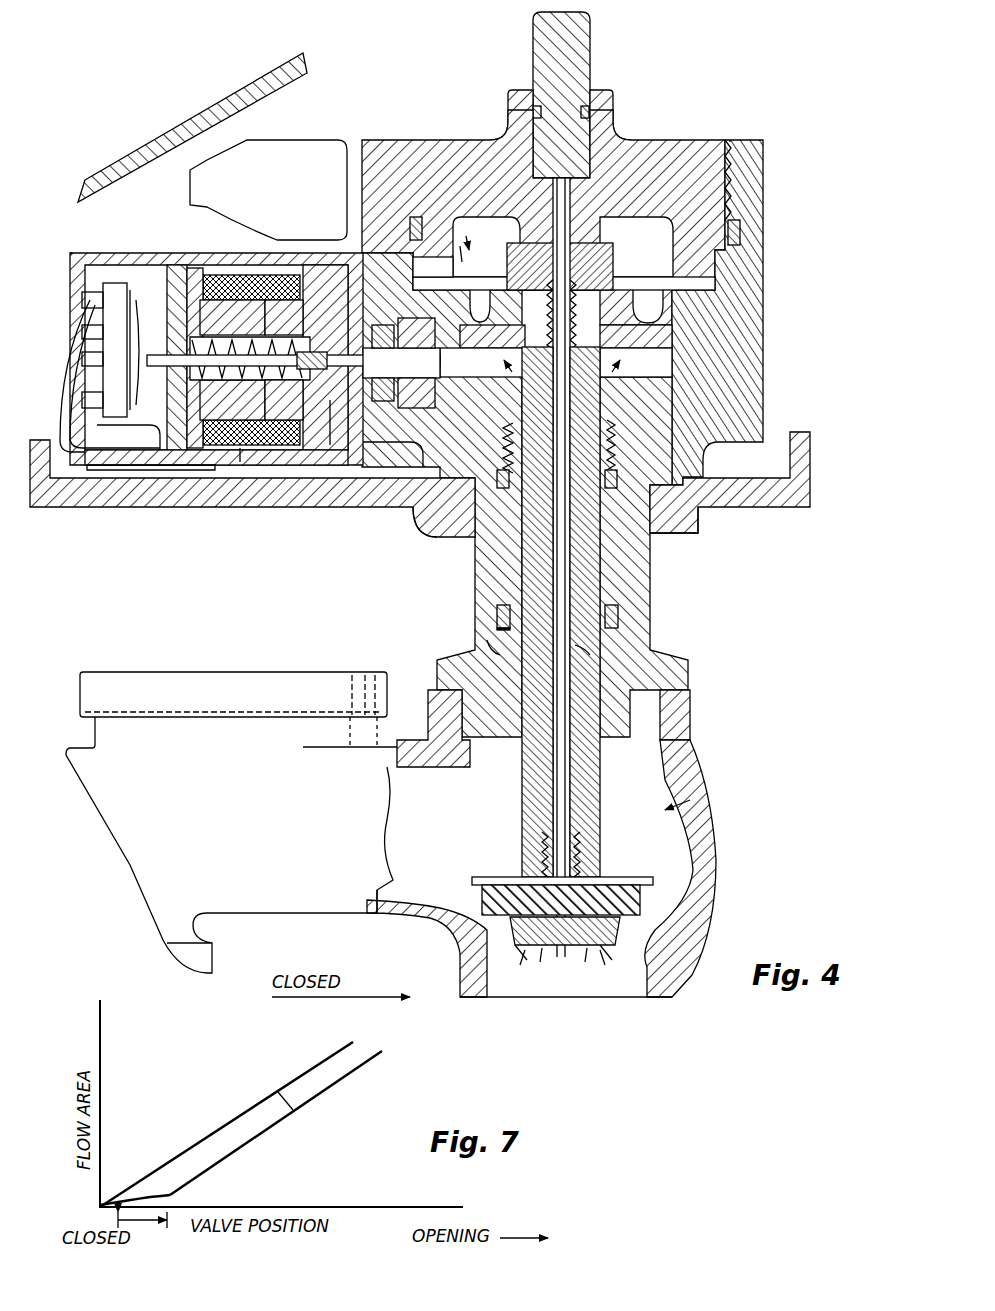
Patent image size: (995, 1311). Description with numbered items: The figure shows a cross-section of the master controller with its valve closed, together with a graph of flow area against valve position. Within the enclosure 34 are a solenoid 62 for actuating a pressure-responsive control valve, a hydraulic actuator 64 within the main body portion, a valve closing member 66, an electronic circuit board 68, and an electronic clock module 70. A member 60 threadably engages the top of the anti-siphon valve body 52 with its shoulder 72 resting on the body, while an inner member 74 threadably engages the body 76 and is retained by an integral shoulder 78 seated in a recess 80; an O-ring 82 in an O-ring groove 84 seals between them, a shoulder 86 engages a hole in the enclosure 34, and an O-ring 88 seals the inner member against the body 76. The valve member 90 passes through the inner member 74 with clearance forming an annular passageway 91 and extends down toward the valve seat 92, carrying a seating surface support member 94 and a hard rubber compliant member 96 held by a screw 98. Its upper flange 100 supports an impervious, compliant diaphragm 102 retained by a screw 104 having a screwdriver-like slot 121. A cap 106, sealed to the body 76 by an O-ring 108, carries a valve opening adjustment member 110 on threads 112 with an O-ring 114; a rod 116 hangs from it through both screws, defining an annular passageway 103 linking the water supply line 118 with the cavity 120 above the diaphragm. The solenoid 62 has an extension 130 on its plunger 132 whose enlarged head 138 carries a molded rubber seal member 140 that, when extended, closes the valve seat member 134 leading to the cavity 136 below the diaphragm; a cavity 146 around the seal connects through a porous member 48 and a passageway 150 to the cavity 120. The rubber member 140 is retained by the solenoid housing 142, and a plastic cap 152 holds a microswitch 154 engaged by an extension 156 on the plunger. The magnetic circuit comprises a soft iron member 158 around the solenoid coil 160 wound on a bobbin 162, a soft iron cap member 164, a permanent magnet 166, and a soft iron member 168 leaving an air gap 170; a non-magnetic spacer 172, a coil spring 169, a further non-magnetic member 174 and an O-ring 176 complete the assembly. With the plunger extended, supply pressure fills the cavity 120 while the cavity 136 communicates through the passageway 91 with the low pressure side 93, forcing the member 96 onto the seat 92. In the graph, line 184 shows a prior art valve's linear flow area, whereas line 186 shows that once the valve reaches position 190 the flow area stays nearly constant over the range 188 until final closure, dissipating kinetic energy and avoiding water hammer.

In FIG. 4, the enclosure 34 is at (402, 508).
In FIG. 4, the porous member 48 is at (435, 272).
In FIG. 4, the anti-siphon valve body 52 is at (700, 722).
In FIG. 4, the member 60 is at (640, 590).
In FIG. 4, the solenoid 62 is at (122, 250).
In FIG. 4, the hydraulic actuator 64 is at (800, 258).
In FIG. 4, the valve closing member 66 is at (692, 800).
In FIG. 4, the electronic circuit board 68 is at (282, 66).
In FIG. 4, the electronic clock module 70 is at (315, 148).
In FIG. 4, the shoulder 72 is at (690, 672).
In FIG. 4, the inner member 74 is at (655, 565).
In FIG. 4, the body 76 is at (755, 410).
In FIG. 4, the integral shoulder 78 is at (520, 745).
In FIG. 4, the recess 80 is at (484, 750).
In FIG. 4, the O-ring 82 is at (497, 622).
In FIG. 4, the O-ring groove 84 is at (497, 606).
In FIG. 4, the shoulder 86 is at (660, 530).
In FIG. 4, the O-ring 88 is at (452, 520).
In FIG. 4, the valve member 90 is at (605, 640).
In FIG. 4, the annular passageway 91 is at (487, 645).
In FIG. 4, the valve seat 92 is at (640, 905).
In FIG. 4, the low pressure side 93 is at (392, 828).
In FIG. 4, the seating surface support member 94 is at (653, 880).
In FIG. 4, the compliant member 96 is at (470, 920).
In FIG. 4, the screw 98 is at (520, 962).
In FIG. 4, the flange 100 is at (660, 338).
In FIG. 4, the diaphragm 102 is at (620, 275).
In FIG. 4, the annular passageway 103 is at (590, 647).
In FIG. 4, the screw 104 is at (600, 260).
In FIG. 4, the cap 106 is at (478, 150).
In FIG. 4, the O-ring 108 is at (740, 232).
In FIG. 4, the valve opening adjustment member 110 is at (590, 60).
In FIG. 4, the threads 112 is at (600, 185).
In FIG. 4, the O-ring 114 is at (600, 120).
In FIG. 4, the rod 116 is at (568, 775).
In FIG. 4, the water supply line 118 is at (620, 988).
In FIG. 4, the cavity 120 is at (655, 232).
In FIG. 4, the slot 121 is at (510, 250).
In FIG. 4, the extension 130 is at (392, 454).
In FIG. 4, the plunger 132 is at (331, 448).
In FIG. 4, the valve seat member 134 is at (445, 372).
In FIG. 4, the cavity 136 is at (660, 362).
In FIG. 4, the enlarged head 138 is at (418, 408).
In FIG. 4, the rubber seal member 140 is at (383, 402).
In FIG. 4, the solenoid housing 142 is at (260, 462).
In FIG. 4, the cavity 146 is at (398, 322).
In FIG. 4, the passageway 150 is at (388, 300).
In FIG. 4, the plastic cap 152 is at (80, 258).
In FIG. 4, the single-pole double-throw switch 154 is at (103, 330).
In FIG. 4, the extension 156 is at (115, 377).
In FIG. 4, the soft iron member 158 is at (325, 270).
In FIG. 4, the solenoid coil 160 is at (240, 463).
In FIG. 4, the bobbin 162 is at (222, 460).
In FIG. 4, the soft iron cap member 164 is at (172, 285).
In FIG. 4, the permanent magnet 166 is at (212, 285).
In FIG. 4, the soft iron member 168 is at (232, 317).
In FIG. 4, the coil spring 169 is at (232, 400).
In FIG. 4, the air gap 170 is at (272, 445).
In FIG. 4, the non-magnetic spacer 172 is at (283, 290).
In FIG. 4, the non-magnetic member 174 is at (162, 272).
In FIG. 4, the O-ring 176 is at (176, 458).
In FIG. 7, the line 184 is at (232, 1124).
In FIG. 7, the line 186 is at (278, 1092).
In FIG. 7, the range 188 is at (150, 1224).
In FIG. 7, the position 190 is at (165, 1200).